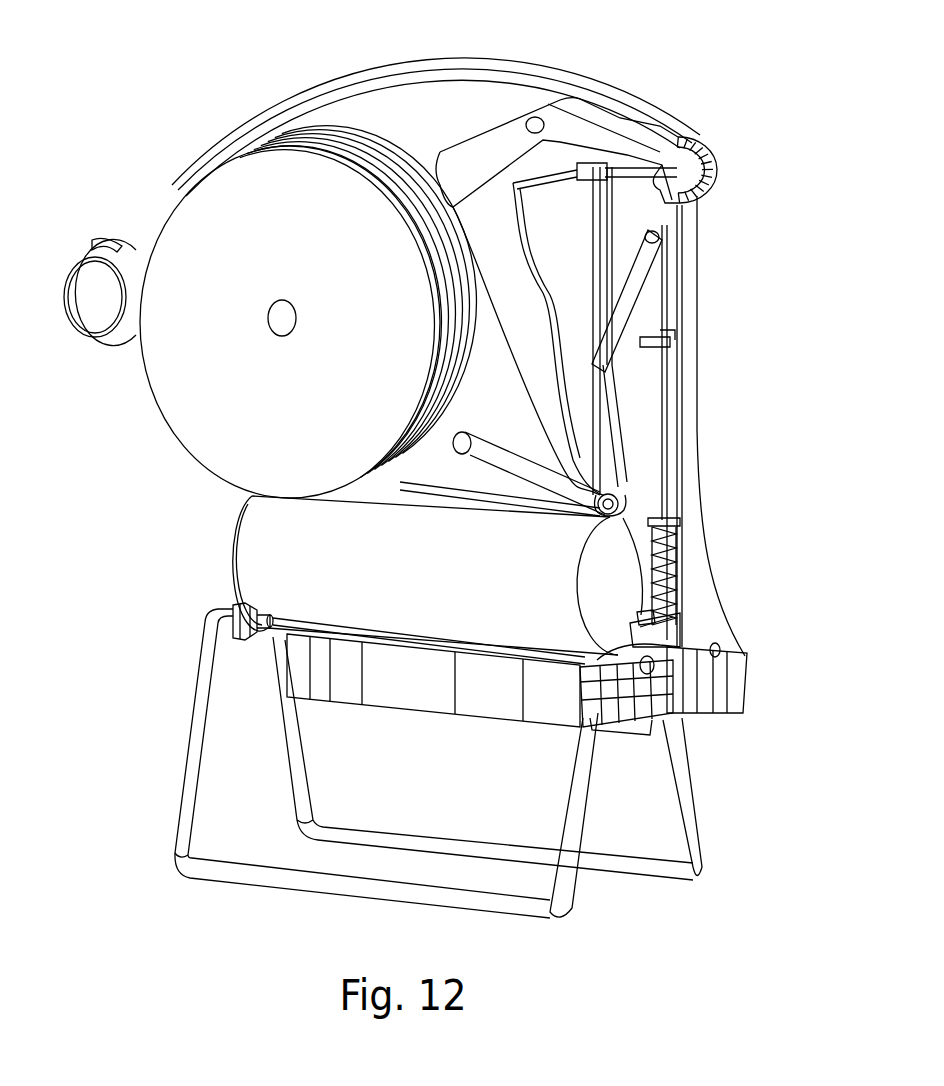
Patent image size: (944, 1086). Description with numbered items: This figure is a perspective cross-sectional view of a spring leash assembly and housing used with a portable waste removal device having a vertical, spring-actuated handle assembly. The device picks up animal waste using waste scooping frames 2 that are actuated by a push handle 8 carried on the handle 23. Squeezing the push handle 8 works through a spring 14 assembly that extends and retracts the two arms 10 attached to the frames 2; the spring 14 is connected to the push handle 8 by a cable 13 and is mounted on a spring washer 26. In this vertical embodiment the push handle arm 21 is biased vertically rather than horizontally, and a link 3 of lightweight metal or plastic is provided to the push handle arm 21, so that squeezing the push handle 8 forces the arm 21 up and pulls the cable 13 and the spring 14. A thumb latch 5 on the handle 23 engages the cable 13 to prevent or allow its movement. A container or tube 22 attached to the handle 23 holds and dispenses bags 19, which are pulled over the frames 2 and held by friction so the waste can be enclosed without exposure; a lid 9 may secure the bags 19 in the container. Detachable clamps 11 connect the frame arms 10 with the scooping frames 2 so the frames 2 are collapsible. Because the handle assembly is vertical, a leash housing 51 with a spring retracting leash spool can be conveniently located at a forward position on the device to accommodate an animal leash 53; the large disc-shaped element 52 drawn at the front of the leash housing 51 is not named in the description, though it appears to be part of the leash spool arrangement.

The waste scooping frame 2 is at (185, 768).
The link 3 is at (672, 327).
The thumb latch 5 is at (714, 148).
The push handle 8 is at (602, 215).
The lid 9 is at (226, 548).
The arm 10 is at (662, 638).
The detachable clamp 11 is at (679, 711).
The cable 13 is at (668, 455).
The spring 14 is at (679, 522).
The bag 19 is at (408, 714).
The push handle arm 21 is at (660, 272).
The container or tube 22 is at (575, 582).
The handle 23 is at (701, 387).
The spring washer 26 is at (656, 618).
The leash housing 51 is at (321, 84).
The disc 52 is at (167, 420).
The animal leash 53 is at (93, 236).